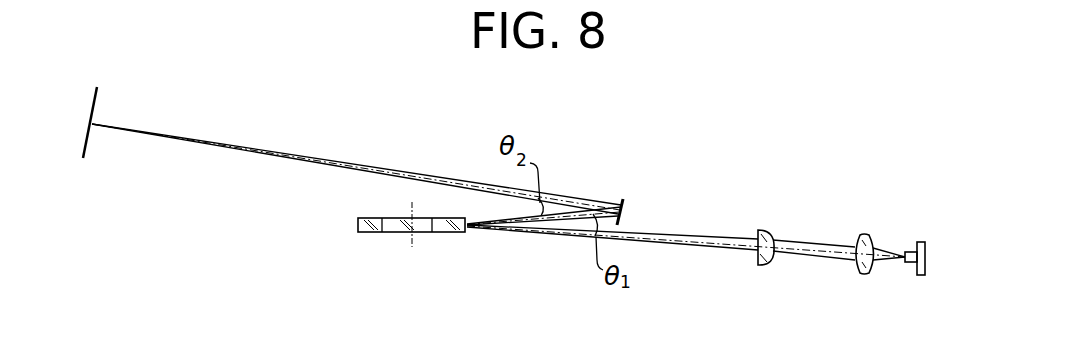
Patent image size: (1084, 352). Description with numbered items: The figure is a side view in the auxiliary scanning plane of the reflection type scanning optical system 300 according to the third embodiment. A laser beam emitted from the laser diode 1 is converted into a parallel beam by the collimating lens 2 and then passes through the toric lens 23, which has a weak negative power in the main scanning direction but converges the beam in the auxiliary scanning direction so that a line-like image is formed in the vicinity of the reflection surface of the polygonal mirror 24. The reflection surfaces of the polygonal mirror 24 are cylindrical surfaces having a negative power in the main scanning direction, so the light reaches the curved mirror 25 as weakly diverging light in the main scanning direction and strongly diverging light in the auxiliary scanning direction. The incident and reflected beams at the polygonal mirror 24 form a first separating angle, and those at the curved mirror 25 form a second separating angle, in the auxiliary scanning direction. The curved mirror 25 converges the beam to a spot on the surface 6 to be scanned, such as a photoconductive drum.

The laser diode 1 is at (923, 277).
The collimating lens 2 is at (860, 273).
The surface to be scanned 6 is at (88, 138).
The toric lens 23 is at (763, 268).
The polygonal mirror 24 is at (403, 229).
The curved mirror 25 is at (622, 200).
The reflection type scanning optical system 300 is at (724, 86).